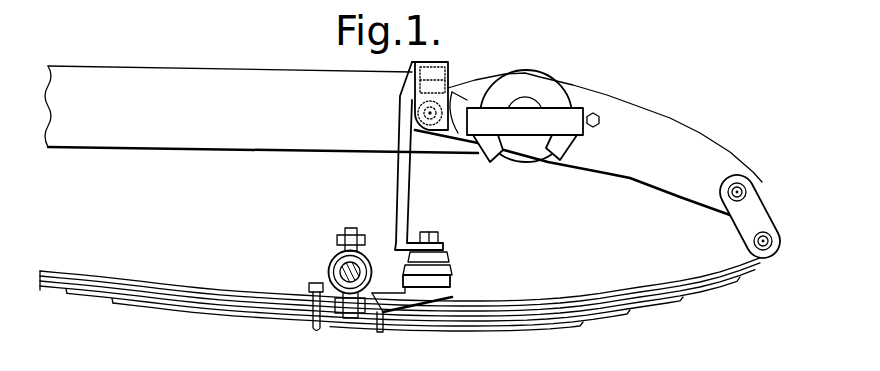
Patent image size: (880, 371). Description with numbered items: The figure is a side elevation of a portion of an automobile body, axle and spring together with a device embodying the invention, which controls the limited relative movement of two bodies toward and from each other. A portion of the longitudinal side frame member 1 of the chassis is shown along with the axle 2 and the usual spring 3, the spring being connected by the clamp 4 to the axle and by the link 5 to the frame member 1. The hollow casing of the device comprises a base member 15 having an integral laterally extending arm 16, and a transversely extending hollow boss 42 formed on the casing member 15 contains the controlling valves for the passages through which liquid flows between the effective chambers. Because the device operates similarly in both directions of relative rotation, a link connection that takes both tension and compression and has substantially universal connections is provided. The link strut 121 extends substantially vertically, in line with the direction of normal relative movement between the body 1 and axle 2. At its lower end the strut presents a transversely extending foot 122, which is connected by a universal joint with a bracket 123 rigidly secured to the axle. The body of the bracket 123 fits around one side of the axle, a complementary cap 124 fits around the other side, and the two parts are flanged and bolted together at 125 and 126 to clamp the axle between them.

The longitudinal side frame member 1 is at (632, 110).
The axle 2 is at (330, 262).
The spring 3 is at (497, 298).
The clamp 4 is at (318, 330).
The link 5 is at (760, 218).
The base member 15 is at (537, 77).
The laterally extending arm 16 is at (479, 95).
The hollow boss 42 is at (557, 112).
The link strut 121 is at (398, 180).
The foot 122 is at (440, 250).
The bracket 123 is at (385, 296).
The cap 124 is at (328, 275).
The bolt 125 is at (340, 228).
The bolt 126 is at (352, 322).